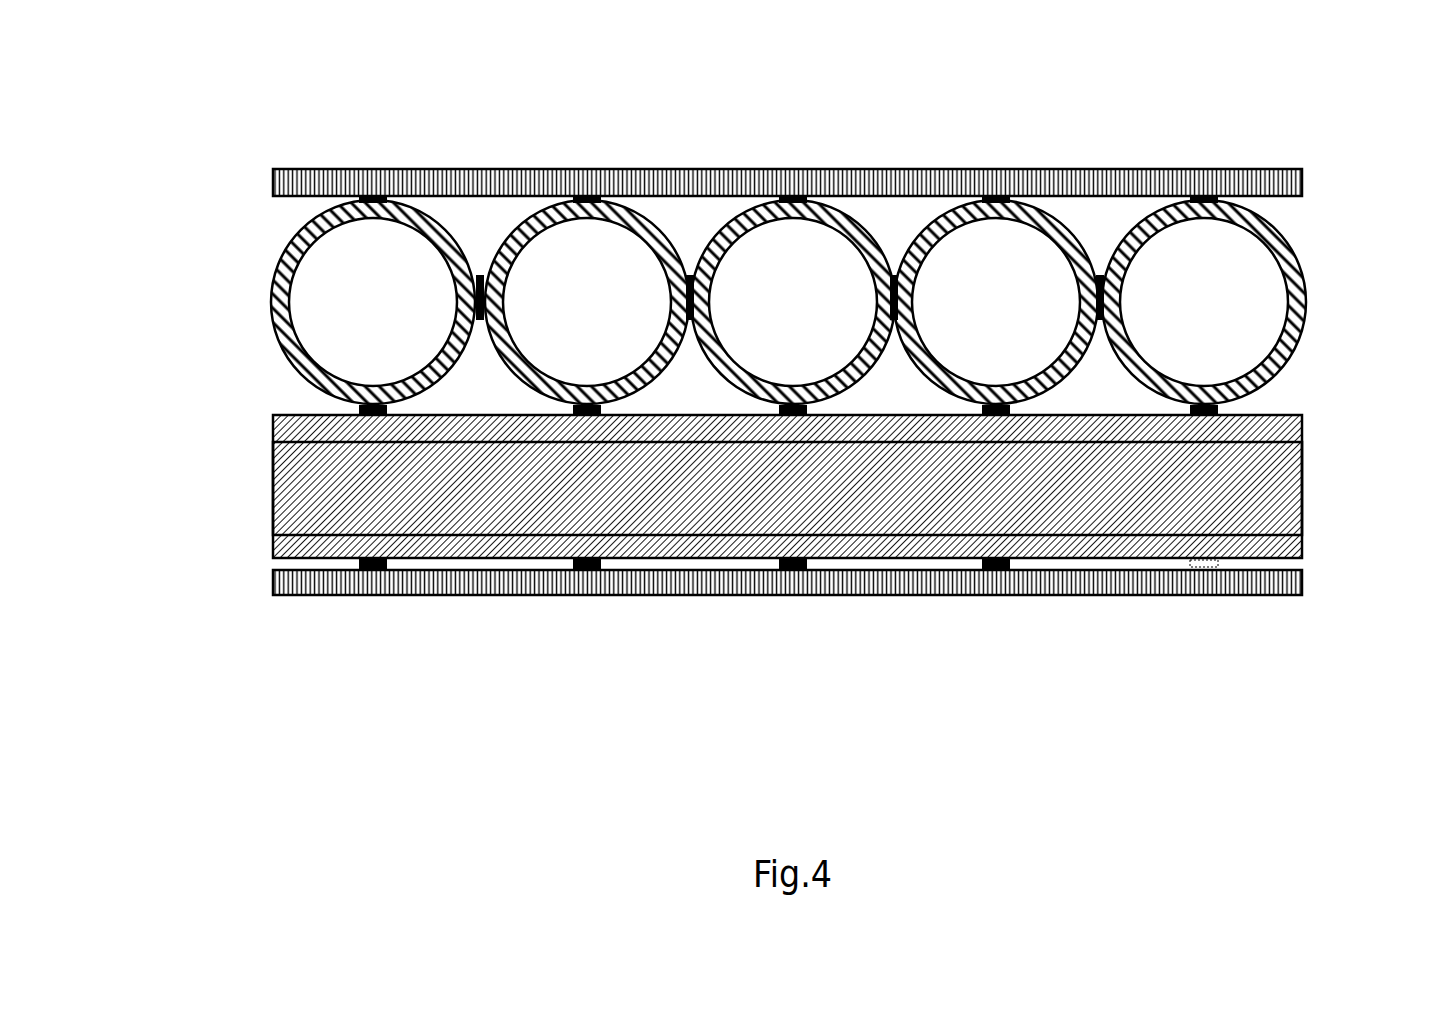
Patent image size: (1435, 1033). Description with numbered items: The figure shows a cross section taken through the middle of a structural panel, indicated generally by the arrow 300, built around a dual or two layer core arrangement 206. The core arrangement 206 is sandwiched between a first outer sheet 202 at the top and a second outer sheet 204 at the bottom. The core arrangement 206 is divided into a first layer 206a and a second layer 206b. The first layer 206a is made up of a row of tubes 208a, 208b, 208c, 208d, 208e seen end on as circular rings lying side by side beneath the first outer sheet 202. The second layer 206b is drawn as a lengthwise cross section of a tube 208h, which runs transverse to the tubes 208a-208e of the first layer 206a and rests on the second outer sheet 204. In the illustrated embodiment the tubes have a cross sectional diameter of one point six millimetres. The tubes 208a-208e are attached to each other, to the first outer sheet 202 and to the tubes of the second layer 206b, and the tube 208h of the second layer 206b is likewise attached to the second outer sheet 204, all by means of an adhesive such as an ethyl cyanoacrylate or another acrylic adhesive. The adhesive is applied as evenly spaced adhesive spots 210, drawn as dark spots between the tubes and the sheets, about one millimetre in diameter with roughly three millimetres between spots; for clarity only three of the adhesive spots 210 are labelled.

The electrochemical cell assembly 300 is at (1190, 62).
The first outer sheet 202 is at (300, 183).
The second outer sheet 204 is at (300, 575).
The core arrangement 206 is at (245, 203).
The first layer 206a is at (1305, 213).
The second layer 206b is at (850, 573).
The tube 208a is at (423, 218).
The tube 208b is at (528, 227).
The tube 208c is at (738, 218).
The tube 208d is at (930, 237).
The tube 208e is at (1137, 233).
The tube 208h is at (430, 487).
The adhesive spots 210 is at (990, 415).